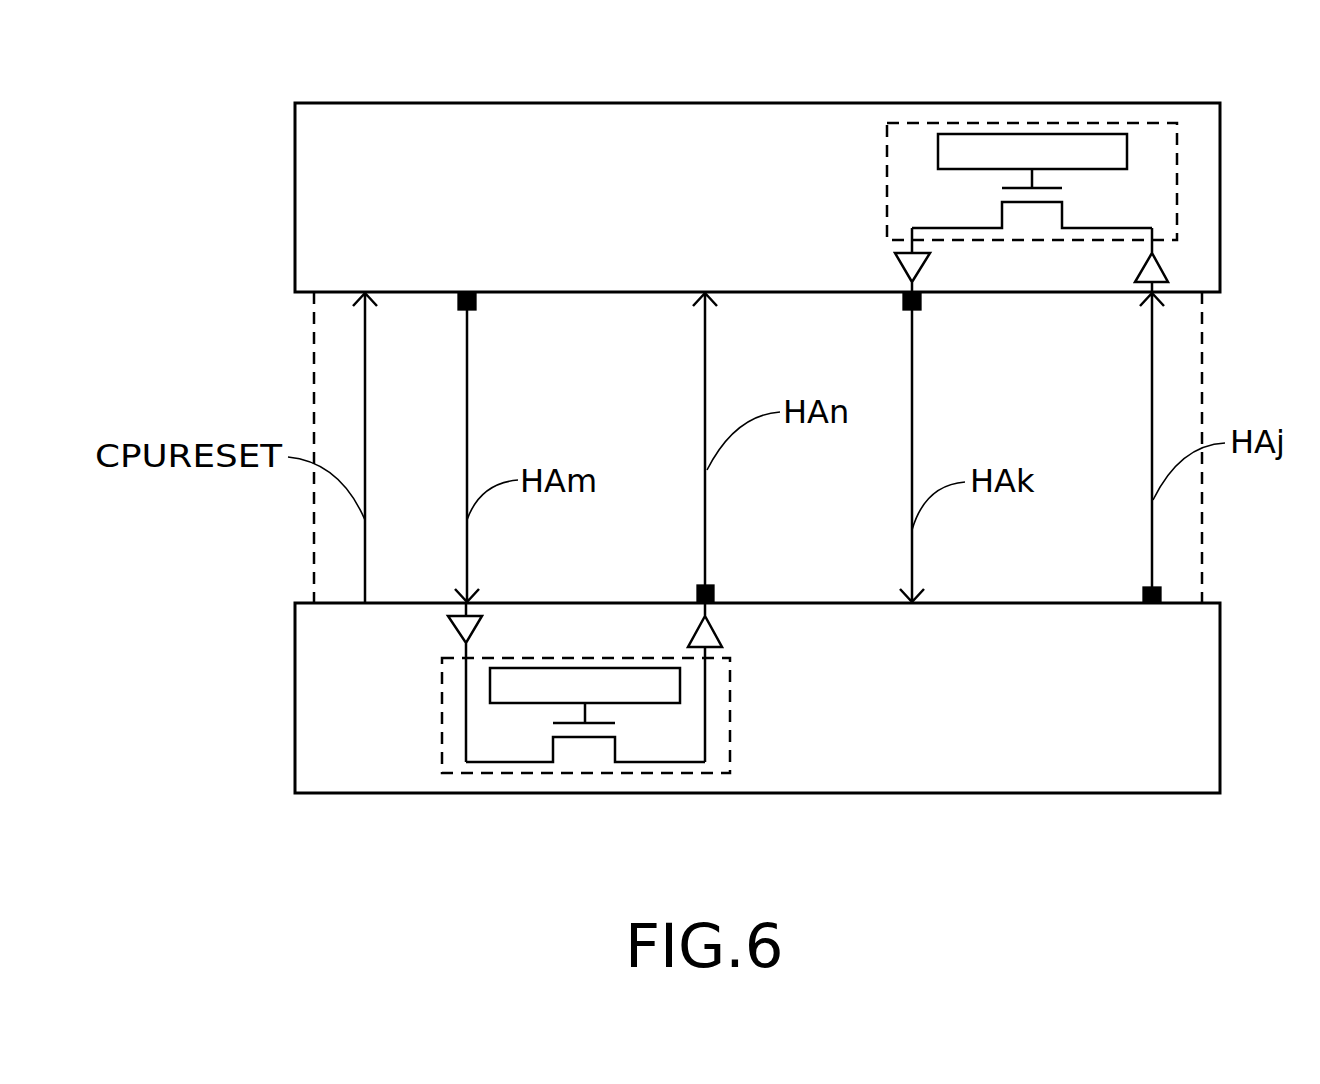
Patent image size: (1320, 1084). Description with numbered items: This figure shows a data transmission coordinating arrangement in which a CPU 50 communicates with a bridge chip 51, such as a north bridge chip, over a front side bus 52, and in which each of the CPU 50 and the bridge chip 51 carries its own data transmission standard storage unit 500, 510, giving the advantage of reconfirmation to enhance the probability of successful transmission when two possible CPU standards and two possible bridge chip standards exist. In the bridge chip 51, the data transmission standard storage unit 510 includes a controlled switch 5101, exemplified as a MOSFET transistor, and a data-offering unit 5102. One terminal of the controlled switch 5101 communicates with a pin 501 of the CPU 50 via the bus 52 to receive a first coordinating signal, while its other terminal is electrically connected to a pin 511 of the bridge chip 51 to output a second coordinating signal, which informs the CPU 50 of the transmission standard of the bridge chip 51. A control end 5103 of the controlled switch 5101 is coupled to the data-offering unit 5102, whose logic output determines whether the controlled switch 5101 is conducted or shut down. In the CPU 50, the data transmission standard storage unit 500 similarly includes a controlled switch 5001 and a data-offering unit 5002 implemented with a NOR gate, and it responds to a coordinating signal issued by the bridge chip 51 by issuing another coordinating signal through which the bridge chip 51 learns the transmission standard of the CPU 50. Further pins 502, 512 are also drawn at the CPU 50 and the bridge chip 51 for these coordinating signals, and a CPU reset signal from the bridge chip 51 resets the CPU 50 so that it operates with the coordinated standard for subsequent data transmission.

The CPU 50 is at (310, 215).
The bridge chip 51 is at (310, 690).
The bus 52 is at (1185, 415).
The data transmission standard storage unit 500 is at (1176, 180).
The controlled switch 5001 is at (1022, 235).
The data-offering unit 5002 is at (1085, 132).
The pin 501 is at (472, 302).
The CPU pin 502 is at (918, 302).
The data transmission standard storage unit 510 is at (442, 742).
The controlled switch 5101 is at (580, 766).
The data-offering unit 5102 is at (520, 665).
The control end 5103 is at (588, 712).
The pin 511 is at (708, 585).
The bridge chip pin 512 is at (1153, 585).